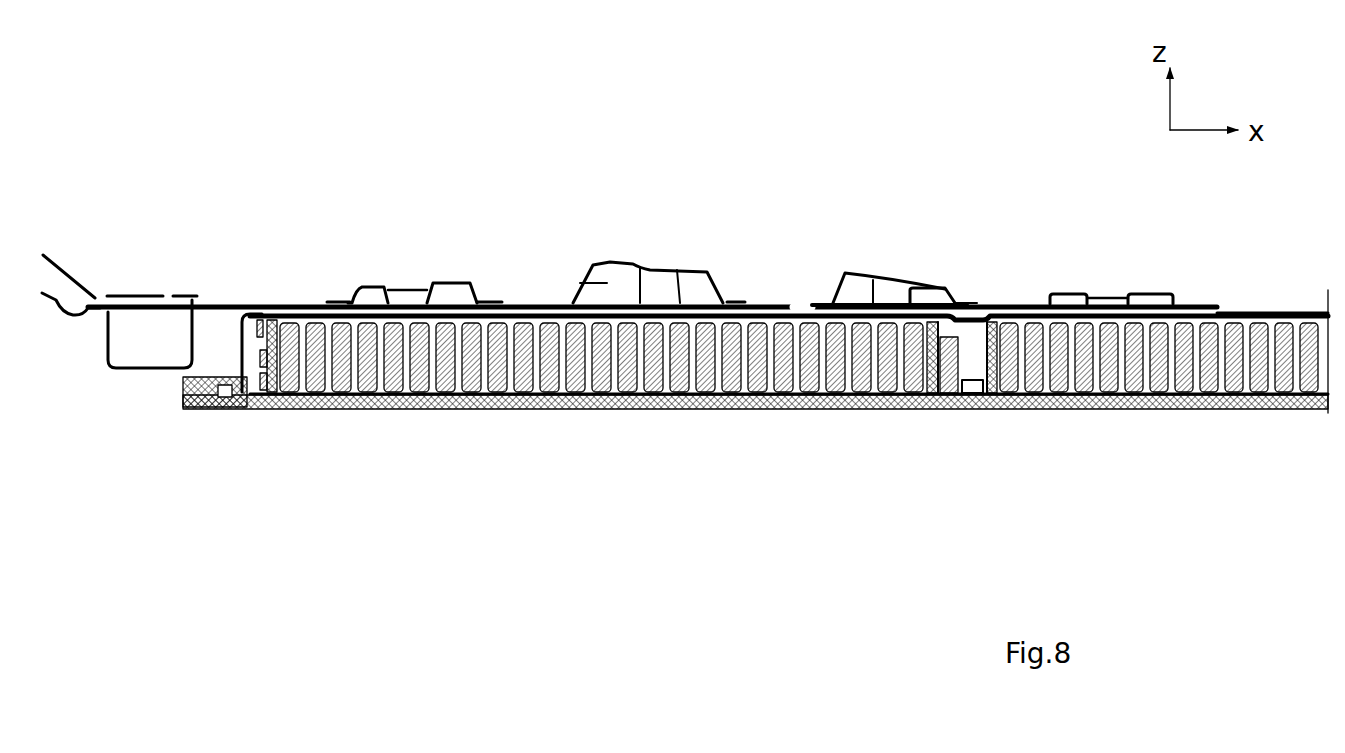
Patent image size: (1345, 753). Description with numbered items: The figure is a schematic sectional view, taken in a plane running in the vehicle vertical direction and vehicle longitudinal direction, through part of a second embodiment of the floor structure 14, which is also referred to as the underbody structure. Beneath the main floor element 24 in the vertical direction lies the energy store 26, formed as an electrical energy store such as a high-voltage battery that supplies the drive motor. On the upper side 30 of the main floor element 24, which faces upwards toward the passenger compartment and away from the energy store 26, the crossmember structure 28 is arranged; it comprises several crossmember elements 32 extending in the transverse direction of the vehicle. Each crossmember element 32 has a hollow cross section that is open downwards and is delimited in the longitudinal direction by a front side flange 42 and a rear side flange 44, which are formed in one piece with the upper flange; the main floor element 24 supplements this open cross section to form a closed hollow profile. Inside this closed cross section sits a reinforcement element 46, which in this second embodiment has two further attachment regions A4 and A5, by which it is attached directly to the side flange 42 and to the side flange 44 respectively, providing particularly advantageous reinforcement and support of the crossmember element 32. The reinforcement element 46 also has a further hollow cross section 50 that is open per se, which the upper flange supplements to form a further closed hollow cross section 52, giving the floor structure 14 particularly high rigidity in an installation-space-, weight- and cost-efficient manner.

The floor structure 14 is at (790, 392).
The main floor element 24 is at (1003, 303).
The energy store 26 is at (438, 392).
The crossmember structure 28 is at (293, 297).
The upper side 30 is at (812, 300).
The crossmember element 32 is at (409, 283).
The side flange 42 is at (340, 300).
The side flange 44 is at (498, 298).
The reinforcement element 46 is at (468, 282).
The further hollow cross section 50 is at (672, 283).
The further closed hollow cross section 52 is at (640, 268).
The attachment region A4 is at (340, 300).
The attachment region A5 is at (485, 295).